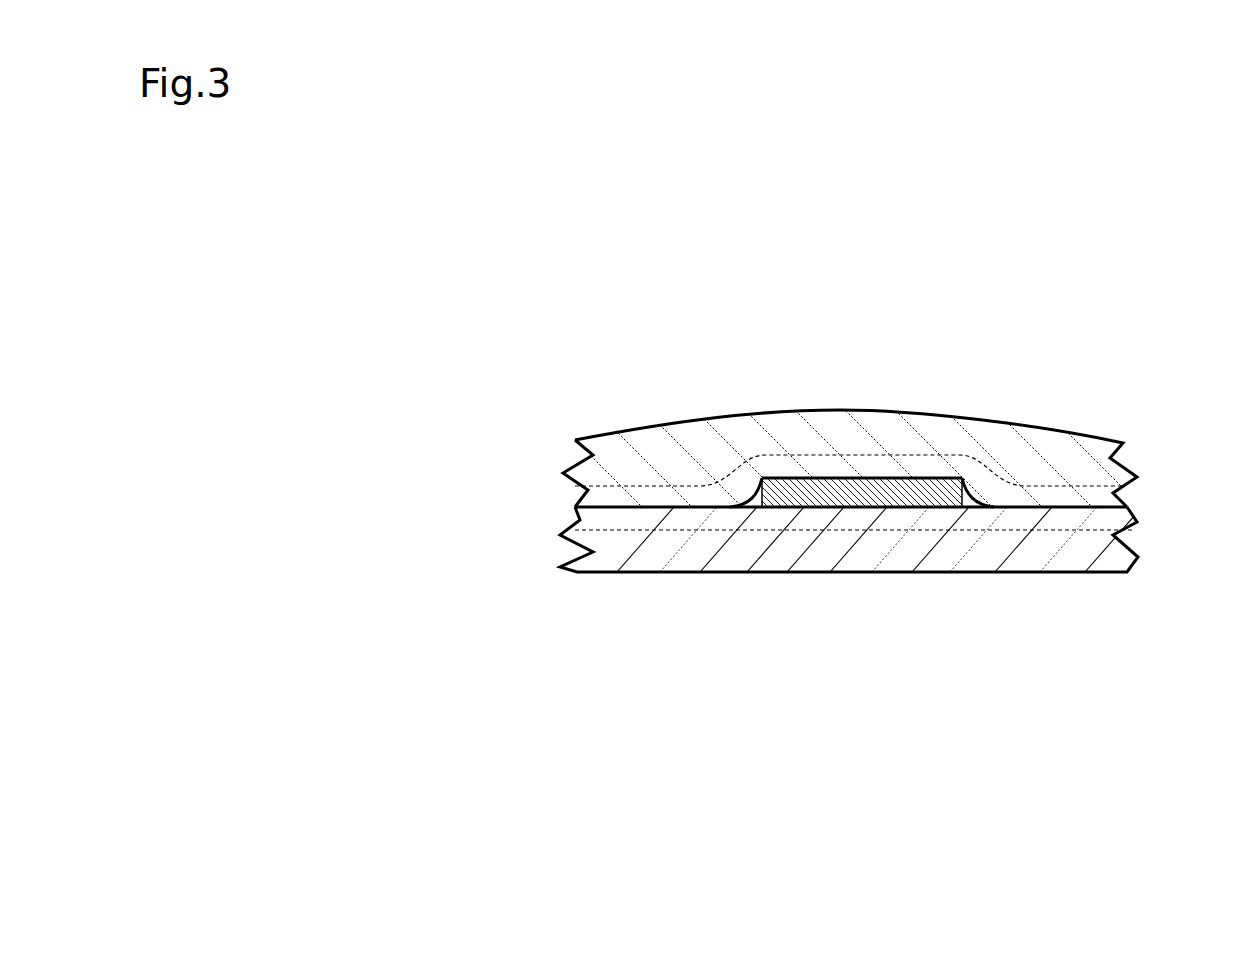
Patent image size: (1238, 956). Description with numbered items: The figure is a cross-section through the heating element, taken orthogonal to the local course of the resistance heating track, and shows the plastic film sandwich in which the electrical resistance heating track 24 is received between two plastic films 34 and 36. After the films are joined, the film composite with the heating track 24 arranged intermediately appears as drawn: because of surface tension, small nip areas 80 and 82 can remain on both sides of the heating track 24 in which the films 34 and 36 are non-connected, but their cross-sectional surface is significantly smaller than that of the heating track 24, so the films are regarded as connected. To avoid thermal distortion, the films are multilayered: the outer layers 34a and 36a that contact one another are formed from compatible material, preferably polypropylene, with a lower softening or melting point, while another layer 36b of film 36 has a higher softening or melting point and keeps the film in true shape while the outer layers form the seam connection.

The electrical resistance heating track 24 is at (900, 493).
The plastic film 34 is at (1090, 590).
The outer layer 34a is at (1115, 520).
The plastic film 36 is at (1098, 425).
The outer layer 36a is at (1105, 497).
The other layer 36b is at (1090, 468).
The nip area 80 is at (752, 498).
The nip area 82 is at (968, 497).